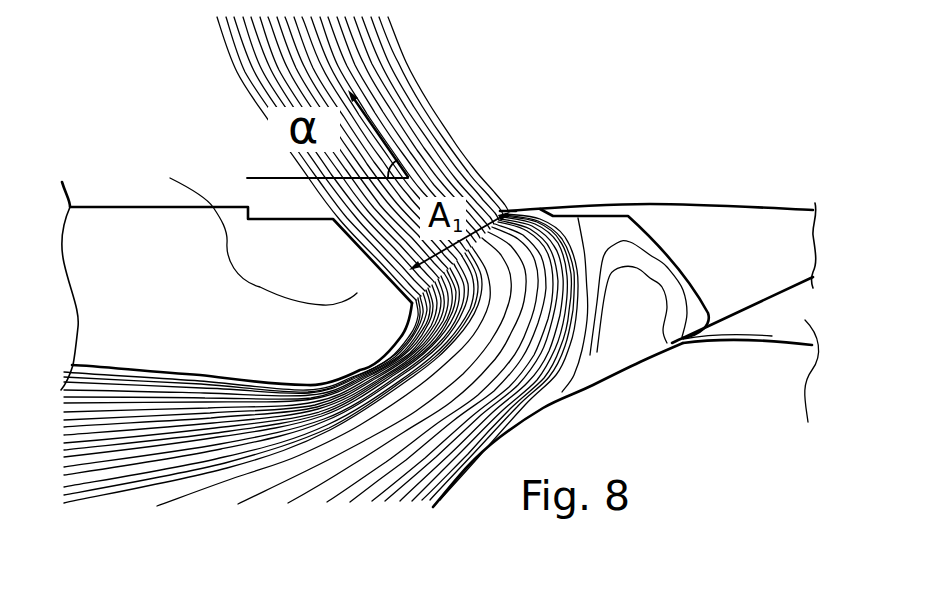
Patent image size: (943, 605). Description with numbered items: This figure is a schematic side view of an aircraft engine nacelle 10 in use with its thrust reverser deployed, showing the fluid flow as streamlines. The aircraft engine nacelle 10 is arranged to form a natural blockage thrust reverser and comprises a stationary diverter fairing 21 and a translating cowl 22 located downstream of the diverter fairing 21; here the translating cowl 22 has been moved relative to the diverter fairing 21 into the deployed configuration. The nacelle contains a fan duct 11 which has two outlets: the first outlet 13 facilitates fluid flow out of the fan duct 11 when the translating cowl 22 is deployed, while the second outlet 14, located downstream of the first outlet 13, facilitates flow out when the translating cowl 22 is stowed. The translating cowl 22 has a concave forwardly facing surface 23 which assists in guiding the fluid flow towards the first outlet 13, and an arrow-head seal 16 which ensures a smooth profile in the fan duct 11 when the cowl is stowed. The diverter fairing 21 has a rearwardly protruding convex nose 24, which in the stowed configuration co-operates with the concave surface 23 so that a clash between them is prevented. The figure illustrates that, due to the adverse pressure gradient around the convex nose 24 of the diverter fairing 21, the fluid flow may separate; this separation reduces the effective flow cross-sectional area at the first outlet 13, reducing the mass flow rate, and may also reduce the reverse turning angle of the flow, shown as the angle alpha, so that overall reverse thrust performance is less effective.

The aircraft engine nacelle 10 is at (138, 82).
The fan duct 11 is at (340, 472).
The first outlet 13 is at (507, 209).
The second outlet 14 is at (807, 384).
The arrow-head seal 16 is at (683, 347).
The diverter fairing 21 is at (107, 245).
The translating cowl 22 is at (760, 231).
The concave forwardly facing surface 23 is at (661, 238).
The convex nose 24 is at (249, 233).